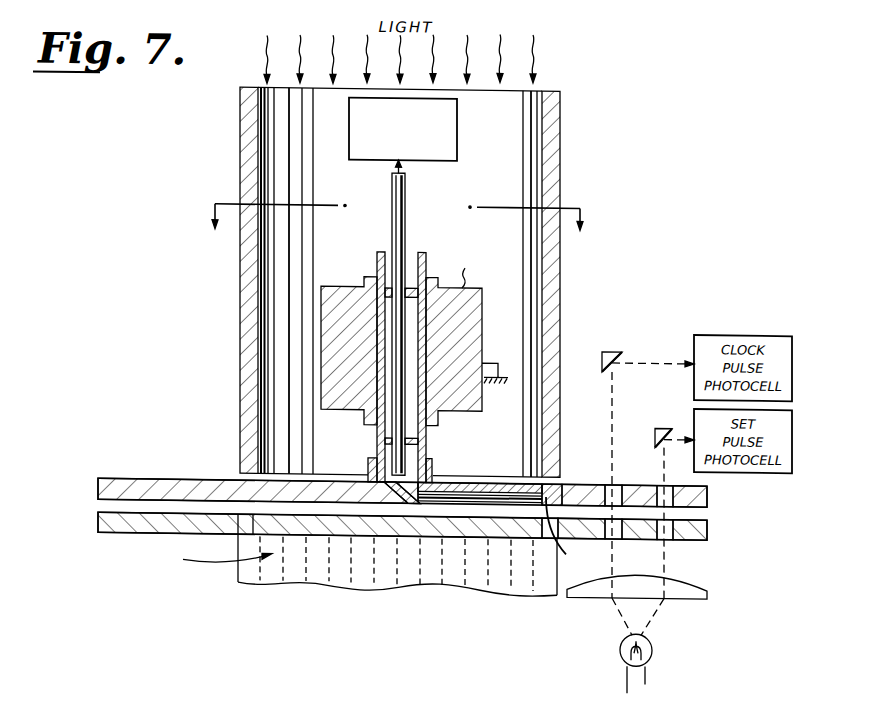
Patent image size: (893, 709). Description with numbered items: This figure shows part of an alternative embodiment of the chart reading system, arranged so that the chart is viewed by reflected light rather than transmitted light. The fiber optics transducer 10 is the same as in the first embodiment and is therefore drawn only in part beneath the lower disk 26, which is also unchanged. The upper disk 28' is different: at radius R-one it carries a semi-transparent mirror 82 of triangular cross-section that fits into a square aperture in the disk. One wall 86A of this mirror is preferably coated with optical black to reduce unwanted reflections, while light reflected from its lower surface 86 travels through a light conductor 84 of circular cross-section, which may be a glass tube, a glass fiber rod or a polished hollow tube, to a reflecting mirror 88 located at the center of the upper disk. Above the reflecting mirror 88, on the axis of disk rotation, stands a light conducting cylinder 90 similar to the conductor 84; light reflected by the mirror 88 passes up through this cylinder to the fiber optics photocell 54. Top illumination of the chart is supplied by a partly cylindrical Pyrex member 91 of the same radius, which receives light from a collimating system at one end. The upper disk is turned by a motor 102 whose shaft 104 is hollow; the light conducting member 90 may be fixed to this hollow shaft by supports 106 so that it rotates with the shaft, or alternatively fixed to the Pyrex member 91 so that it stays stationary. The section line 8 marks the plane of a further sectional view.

The fiber optics photocell 54 is at (457, 129).
The light conducting cylinder 90 is at (406, 200).
The partly cylindrical Pyrex member 91 is at (560, 110).
The section line 8- 8 is at (397, 216).
The supports 106 is at (388, 283).
The motor shaft 104 is at (377, 252).
The motor 102 is at (482, 300).
The upper disk 28' is at (389, 475).
The lower disk 26 is at (98, 522).
The fiber optics transducer 10 is at (308, 566).
The reflecting mirror 88 is at (403, 478).
The light conductor 84 is at (469, 488).
The semi-transparent mirror 82 is at (540, 481).
The wall of the mirror 86A is at (572, 477).
The lower surface of the mirror 86 is at (567, 532).